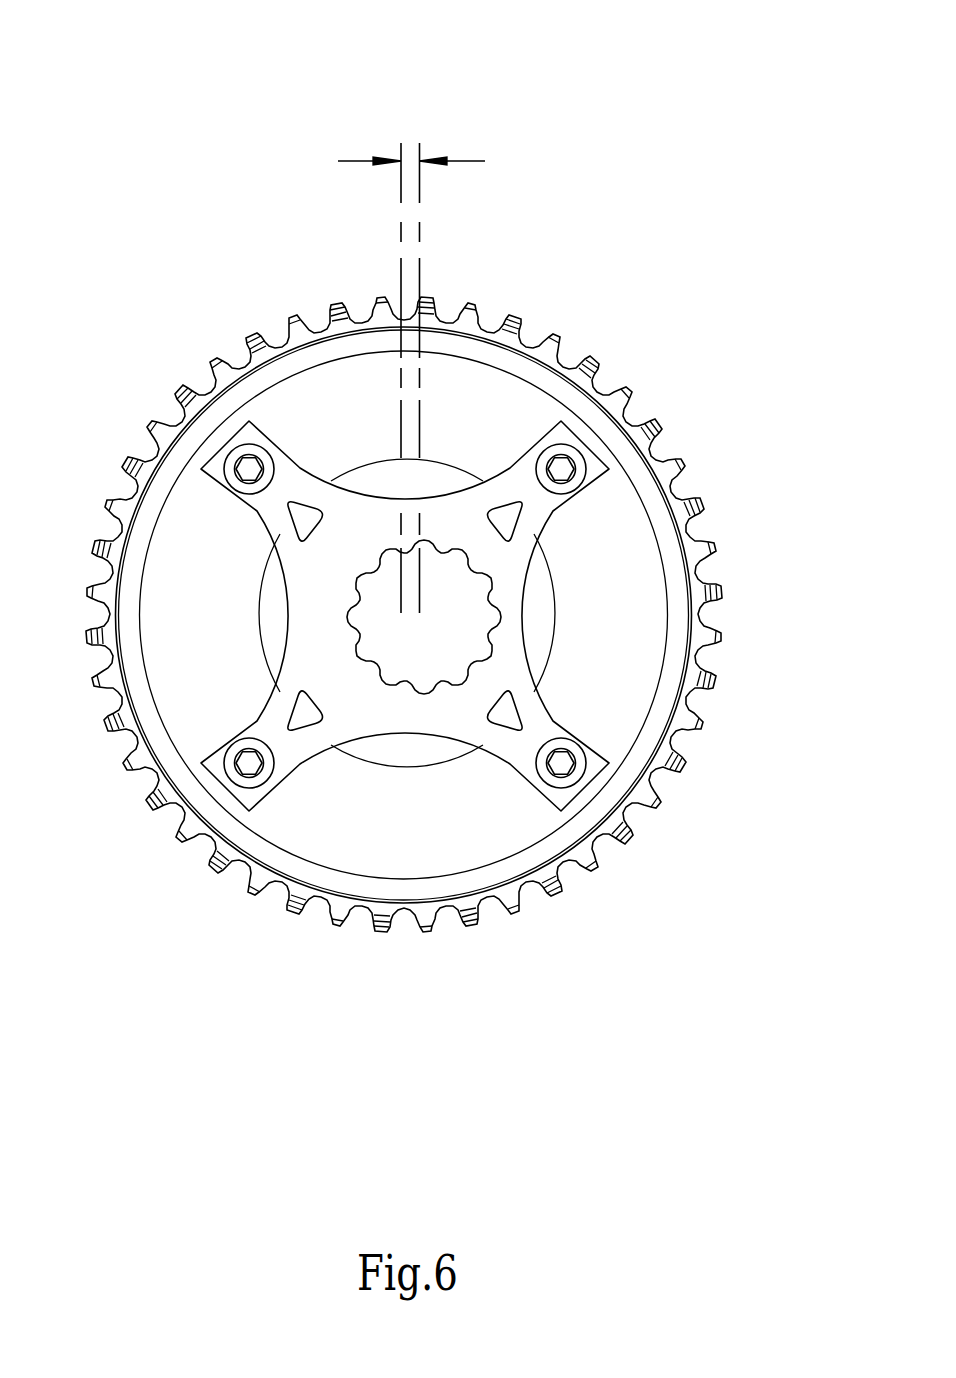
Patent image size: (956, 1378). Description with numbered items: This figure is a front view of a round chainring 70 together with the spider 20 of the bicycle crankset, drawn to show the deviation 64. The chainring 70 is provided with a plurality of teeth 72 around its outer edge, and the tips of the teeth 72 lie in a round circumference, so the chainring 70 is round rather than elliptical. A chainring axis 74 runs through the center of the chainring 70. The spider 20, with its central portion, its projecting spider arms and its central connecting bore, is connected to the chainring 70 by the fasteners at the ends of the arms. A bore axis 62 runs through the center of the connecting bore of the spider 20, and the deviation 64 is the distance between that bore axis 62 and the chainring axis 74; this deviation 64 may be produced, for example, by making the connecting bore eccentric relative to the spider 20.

The spider 20 is at (540, 592).
The bore axis 62 is at (420, 231).
The deviation 64 is at (409, 161).
The chainring 70 is at (572, 325).
The teeth 72 is at (628, 396).
The chainring axis 74 is at (401, 268).